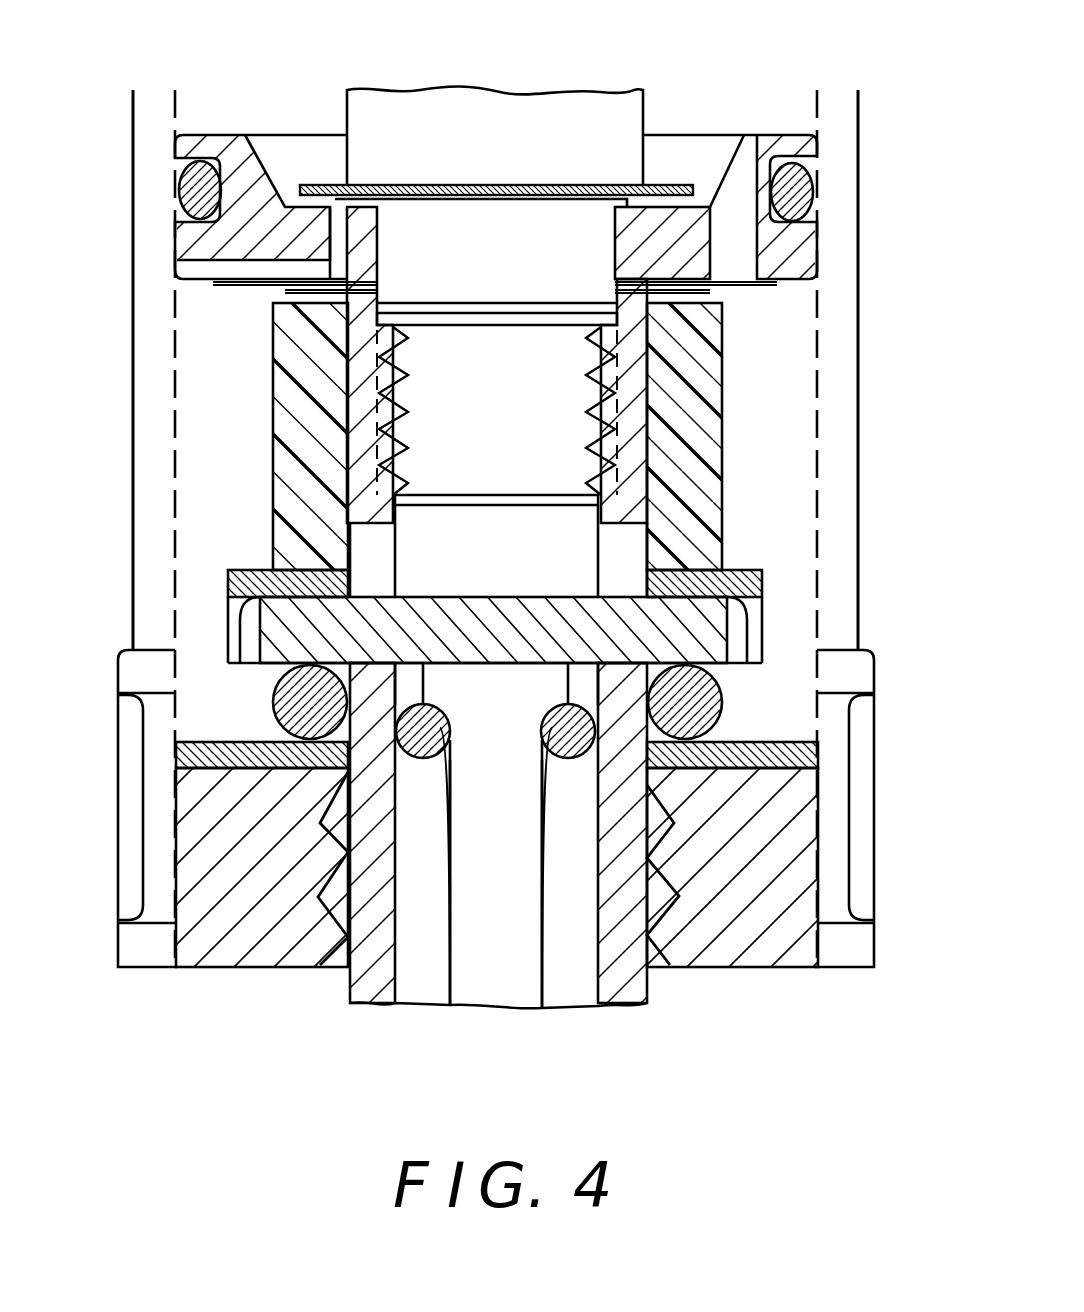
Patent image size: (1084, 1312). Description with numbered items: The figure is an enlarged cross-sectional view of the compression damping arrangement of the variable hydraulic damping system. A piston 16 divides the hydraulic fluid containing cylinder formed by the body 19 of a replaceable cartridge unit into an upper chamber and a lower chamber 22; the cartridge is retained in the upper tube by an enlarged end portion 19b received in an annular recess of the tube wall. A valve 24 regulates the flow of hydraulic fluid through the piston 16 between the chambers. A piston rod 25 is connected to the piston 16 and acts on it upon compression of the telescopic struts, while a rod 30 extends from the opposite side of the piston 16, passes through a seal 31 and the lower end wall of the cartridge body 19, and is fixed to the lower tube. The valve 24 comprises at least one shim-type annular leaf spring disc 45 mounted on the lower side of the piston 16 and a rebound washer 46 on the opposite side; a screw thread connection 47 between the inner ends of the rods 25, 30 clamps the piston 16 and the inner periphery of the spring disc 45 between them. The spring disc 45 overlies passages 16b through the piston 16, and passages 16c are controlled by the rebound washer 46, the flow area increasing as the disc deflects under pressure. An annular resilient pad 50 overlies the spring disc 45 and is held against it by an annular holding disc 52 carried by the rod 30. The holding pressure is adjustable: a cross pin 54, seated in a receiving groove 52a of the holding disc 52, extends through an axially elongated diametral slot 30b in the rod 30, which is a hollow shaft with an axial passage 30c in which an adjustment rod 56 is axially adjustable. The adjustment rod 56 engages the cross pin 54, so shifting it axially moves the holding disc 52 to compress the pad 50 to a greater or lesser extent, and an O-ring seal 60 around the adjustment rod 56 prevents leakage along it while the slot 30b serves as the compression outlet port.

The piston 16 is at (210, 135).
The passages 16b is at (738, 258).
The passages 16c is at (337, 223).
The body 19 is at (133, 522).
The enlarged end portion 19b is at (117, 680).
The lower chamber 22 is at (250, 490).
The valve 24 is at (263, 297).
The piston rod 25 is at (493, 107).
The rod 30 is at (365, 994).
The diametral slot 30b is at (378, 568).
The axial passage 30c is at (568, 990).
The seal 31 is at (720, 702).
The spring disc 45 is at (707, 292).
The rebound washer 46 is at (685, 185).
The screw thread connection 47 is at (595, 350).
The annular resilient pad 50 is at (720, 495).
The annular holding disc 52 is at (757, 630).
The receiving groove 52a is at (254, 652).
The cross pin 54 is at (450, 595).
The adjustment rod 56 is at (493, 977).
The O-ring seal 60 is at (570, 760).